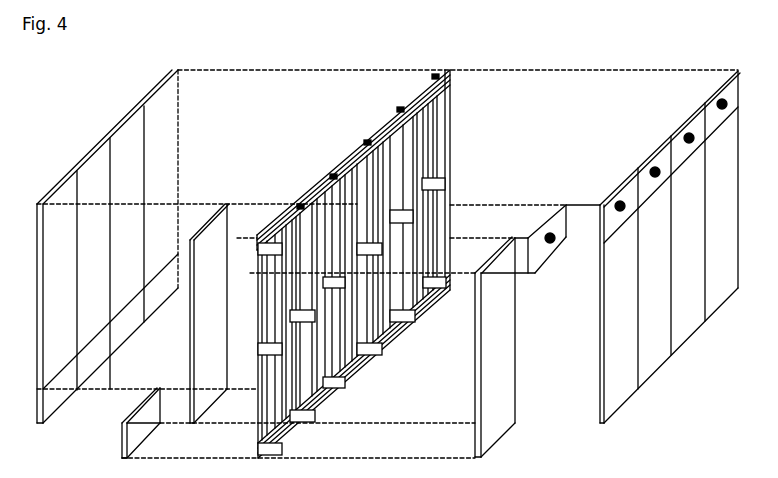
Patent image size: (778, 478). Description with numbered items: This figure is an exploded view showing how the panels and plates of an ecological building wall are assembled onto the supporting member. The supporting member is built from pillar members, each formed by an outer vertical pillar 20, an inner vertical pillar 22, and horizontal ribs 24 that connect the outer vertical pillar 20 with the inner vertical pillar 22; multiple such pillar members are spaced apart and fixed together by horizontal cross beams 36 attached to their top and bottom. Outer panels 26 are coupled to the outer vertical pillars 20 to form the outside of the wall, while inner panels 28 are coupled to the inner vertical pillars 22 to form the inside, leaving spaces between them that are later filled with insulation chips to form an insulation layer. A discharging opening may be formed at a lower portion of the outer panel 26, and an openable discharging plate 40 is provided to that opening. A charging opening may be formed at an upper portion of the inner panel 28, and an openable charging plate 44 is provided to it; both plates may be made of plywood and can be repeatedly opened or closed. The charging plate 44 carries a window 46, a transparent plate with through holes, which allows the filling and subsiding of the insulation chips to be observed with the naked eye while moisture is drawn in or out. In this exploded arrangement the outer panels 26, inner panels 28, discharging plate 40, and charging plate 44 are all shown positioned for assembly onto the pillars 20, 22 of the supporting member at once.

The outer vertical pillar 20 is at (427, 107).
The inner vertical pillar 22 is at (447, 148).
The horizontal rib 24 is at (430, 183).
The outer panel 26 is at (168, 151).
The inner panel 28 is at (600, 363).
The horizontal cross beam 36 is at (315, 187).
The discharging plate 40 is at (122, 438).
The charging plate 44 is at (723, 78).
The window 46 is at (550, 245).